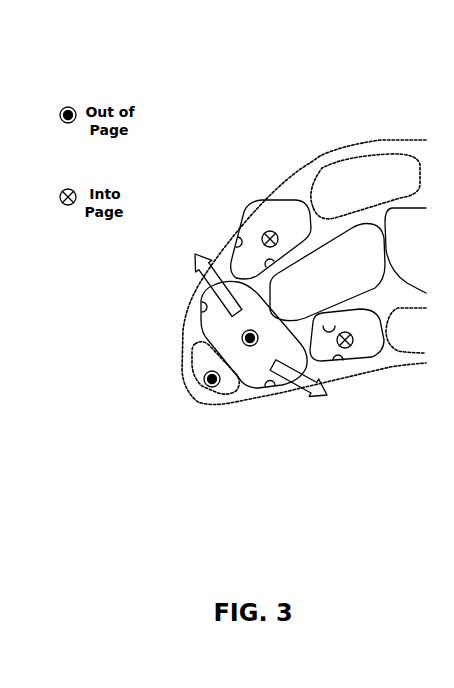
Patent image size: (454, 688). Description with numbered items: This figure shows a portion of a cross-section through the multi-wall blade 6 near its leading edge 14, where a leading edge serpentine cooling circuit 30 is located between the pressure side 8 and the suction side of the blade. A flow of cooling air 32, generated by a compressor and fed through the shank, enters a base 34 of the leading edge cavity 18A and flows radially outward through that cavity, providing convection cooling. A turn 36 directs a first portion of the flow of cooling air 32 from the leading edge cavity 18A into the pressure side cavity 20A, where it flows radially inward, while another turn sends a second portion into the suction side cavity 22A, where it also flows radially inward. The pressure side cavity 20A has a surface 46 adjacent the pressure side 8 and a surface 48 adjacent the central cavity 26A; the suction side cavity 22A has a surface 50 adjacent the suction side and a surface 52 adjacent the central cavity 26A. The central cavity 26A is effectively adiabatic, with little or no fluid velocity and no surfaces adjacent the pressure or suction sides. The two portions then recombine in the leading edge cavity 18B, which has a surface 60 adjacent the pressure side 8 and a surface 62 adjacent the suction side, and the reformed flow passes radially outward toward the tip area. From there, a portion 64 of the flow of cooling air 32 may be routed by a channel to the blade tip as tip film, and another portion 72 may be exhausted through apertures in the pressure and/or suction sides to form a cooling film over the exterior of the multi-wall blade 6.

The multi-wall blade 6 is at (295, 122).
The pressure side 8 is at (247, 470).
The leading edge 14 is at (139, 451).
The leading edge cavity 18A is at (194, 381).
The leading edge cavity 18B is at (200, 327).
The pressure side cavity 20A is at (362, 361).
The suction side cavity 22A is at (255, 227).
The central cavity 26A is at (313, 281).
The leading edge serpentine cooling circuit 30 is at (214, 106).
The flow of cooling air 32 is at (253, 347).
The base 34 is at (353, 340).
The turn 36 is at (272, 230).
The surface 46 is at (337, 366).
The surface 48 is at (327, 330).
The surface 50 is at (238, 242).
The surface 52 is at (271, 266).
The surface 60 is at (279, 388).
The surface 62 is at (200, 308).
The portion of the flow of cooling air 64 is at (190, 259).
The portion of the flow of cooling air 72 is at (316, 404).